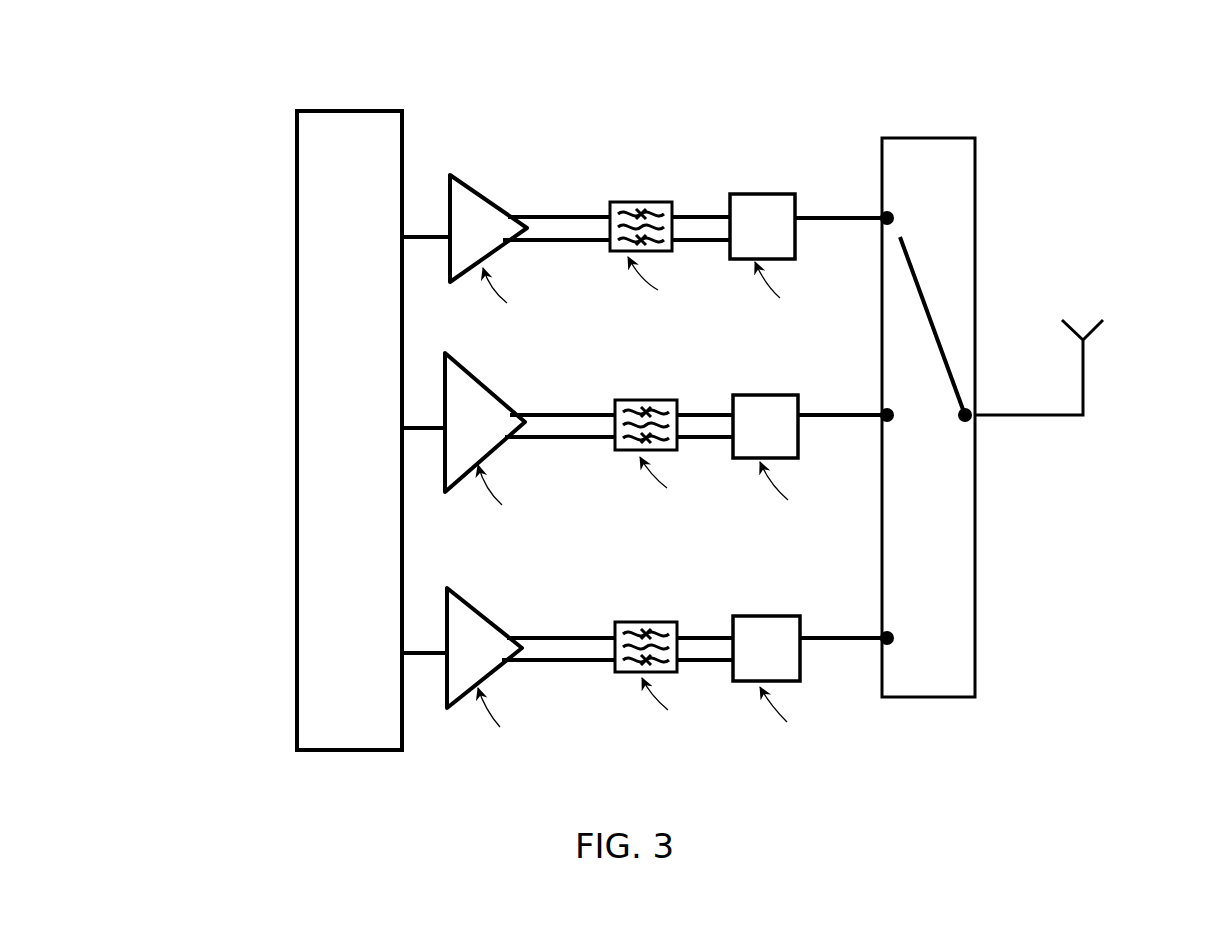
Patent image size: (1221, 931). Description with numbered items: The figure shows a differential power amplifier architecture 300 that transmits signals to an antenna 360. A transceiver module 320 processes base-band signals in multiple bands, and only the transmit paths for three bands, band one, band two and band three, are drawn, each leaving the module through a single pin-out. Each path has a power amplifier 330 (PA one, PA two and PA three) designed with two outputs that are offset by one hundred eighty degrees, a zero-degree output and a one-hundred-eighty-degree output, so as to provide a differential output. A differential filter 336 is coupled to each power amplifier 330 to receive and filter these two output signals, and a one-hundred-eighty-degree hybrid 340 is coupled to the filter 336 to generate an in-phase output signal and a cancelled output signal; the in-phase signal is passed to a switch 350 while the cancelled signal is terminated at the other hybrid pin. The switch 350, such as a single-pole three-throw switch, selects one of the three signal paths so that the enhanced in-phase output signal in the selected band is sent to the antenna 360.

The differential power amplifier architecture 300 is at (163, 68).
The transceiver module 320 is at (290, 672).
The power amplifier 330 is at (498, 117).
The differential filter 336 is at (645, 125).
The 180° hybrid 340 is at (758, 162).
The switch 350 is at (932, 700).
The antenna 360 is at (1087, 367).